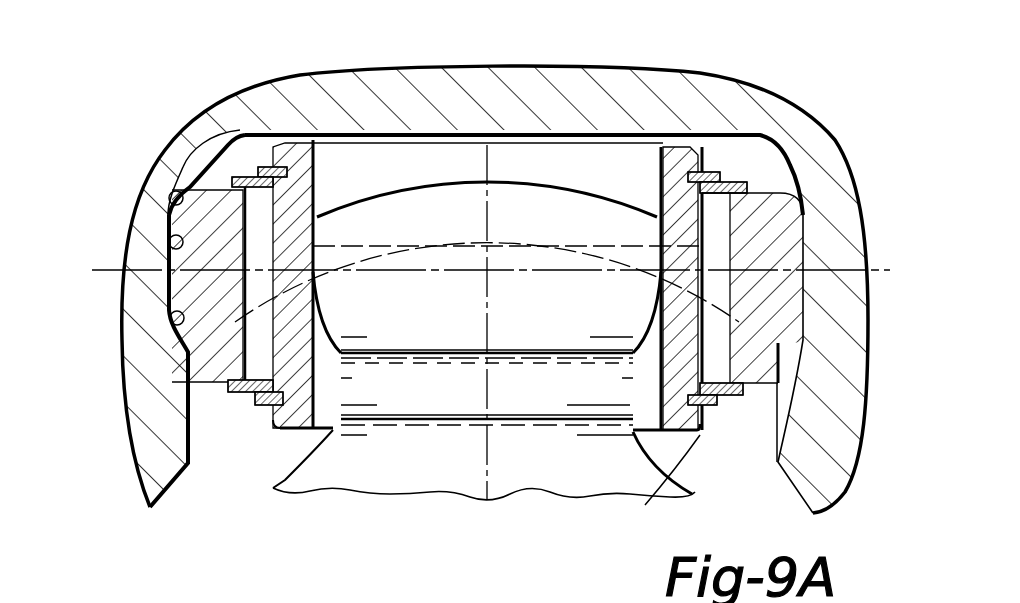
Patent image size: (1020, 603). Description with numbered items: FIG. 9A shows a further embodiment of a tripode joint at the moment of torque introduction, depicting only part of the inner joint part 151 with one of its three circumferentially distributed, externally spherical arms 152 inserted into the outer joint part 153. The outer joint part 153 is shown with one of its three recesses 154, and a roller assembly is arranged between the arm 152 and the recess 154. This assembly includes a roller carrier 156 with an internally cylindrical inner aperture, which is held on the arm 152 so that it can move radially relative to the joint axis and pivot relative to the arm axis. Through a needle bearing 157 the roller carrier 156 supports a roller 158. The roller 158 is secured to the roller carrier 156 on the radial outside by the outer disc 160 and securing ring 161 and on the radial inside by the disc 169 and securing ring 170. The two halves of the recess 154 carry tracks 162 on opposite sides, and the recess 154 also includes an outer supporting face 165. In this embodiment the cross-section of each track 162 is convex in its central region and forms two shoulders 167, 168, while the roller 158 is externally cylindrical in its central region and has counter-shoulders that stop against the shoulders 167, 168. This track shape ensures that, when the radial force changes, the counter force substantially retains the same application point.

The inner joint part 151 is at (360, 447).
The arm 152 is at (410, 377).
The outer joint part 153 is at (595, 98).
The recess 154 is at (235, 157).
The roller carrier 156 is at (653, 482).
The needle bearing 157 is at (727, 407).
The roller 158 is at (745, 398).
The outer disc 160 is at (740, 183).
The securing ring 161 is at (710, 172).
The track 162 is at (167, 233).
The outer supporting face 165 is at (402, 134).
The shoulder 167 is at (210, 180).
The shoulder 168 is at (170, 313).
The disc 169 is at (685, 403).
The securing ring 170 is at (698, 392).